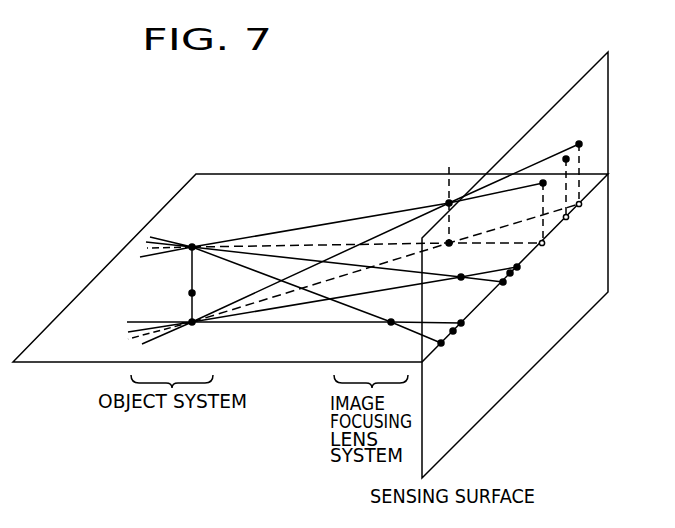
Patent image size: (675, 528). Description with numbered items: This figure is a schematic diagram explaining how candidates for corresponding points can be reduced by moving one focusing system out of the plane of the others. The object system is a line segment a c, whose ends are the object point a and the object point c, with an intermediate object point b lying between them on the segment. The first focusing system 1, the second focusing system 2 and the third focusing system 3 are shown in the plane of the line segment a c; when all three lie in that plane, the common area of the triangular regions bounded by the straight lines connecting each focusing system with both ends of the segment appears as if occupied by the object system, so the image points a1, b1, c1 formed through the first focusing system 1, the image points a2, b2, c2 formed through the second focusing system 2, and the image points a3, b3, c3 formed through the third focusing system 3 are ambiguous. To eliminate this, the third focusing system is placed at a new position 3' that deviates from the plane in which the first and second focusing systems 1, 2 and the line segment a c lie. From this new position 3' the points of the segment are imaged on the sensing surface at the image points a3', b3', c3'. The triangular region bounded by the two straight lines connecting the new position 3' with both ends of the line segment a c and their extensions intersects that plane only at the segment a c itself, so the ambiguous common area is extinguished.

The object point a is at (189, 333).
The object point b is at (182, 292).
The object point c is at (189, 235).
The image focusing lens position 1 is at (392, 312).
The image focusing lens position 2 is at (460, 288).
The image focusing lens position 3 is at (448, 254).
The new position of the third focusing system 3' is at (439, 194).
The image point a1 of object a through lens 1 a1 is at (472, 327).
The image point b1 of object b through lens 1 b1 is at (454, 333).
The image point c1 of object c through lens 1 c1 is at (444, 356).
The image point a2 of object a through lens 2 a2 is at (528, 276).
The image point b2 of object b through lens 2 b2 is at (511, 275).
The image point c2 of object c through lens 2 c2 is at (507, 295).
The image point a3 of object a through lens 3 a3 is at (588, 214).
The image point b3 of object b through lens 3 b3 is at (573, 233).
The image point c3 of object c through lens 3 c3 is at (549, 254).
The image point a3 prime on sensing surface a3' is at (581, 133).
The image point b3 prime on sensing surface b3' is at (553, 144).
The image point c3 prime on sensing surface c3' is at (525, 199).